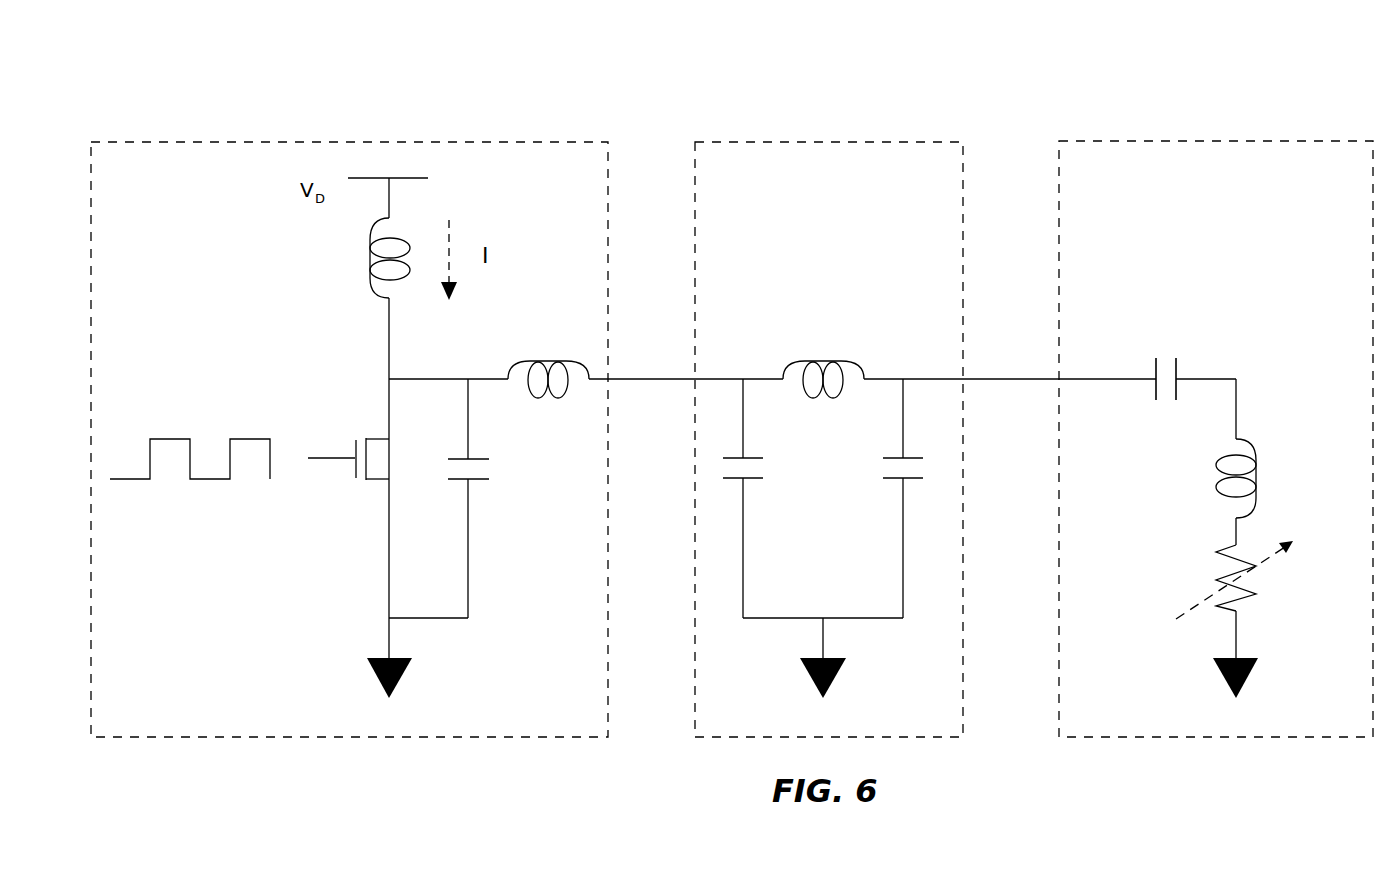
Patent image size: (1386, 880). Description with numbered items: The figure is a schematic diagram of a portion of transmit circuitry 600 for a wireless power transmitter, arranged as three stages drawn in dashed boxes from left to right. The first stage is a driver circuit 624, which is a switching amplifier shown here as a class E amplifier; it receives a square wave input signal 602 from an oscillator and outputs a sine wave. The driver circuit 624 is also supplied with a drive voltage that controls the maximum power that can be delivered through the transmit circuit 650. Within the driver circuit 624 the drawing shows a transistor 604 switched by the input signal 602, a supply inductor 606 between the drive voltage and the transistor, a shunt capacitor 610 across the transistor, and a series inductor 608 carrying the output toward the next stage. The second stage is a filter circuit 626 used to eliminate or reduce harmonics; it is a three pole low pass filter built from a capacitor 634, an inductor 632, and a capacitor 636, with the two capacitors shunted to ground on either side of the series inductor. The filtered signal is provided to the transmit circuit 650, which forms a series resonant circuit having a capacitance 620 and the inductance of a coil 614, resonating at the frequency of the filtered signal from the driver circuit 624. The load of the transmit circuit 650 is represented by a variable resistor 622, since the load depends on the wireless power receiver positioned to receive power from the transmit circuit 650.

The transmit circuitry 600 is at (268, 93).
The input signal 602 is at (165, 439).
The transistor 604 is at (375, 437).
The inductor 606 is at (370, 240).
The inductor 608 is at (548, 358).
The capacitor 610 is at (478, 457).
The coil 614 is at (1247, 438).
The capacitance 620 is at (1178, 368).
The variable resistor 622 is at (1228, 545).
The driver circuit 624 is at (465, 142).
The filter circuit 626 is at (888, 142).
The inductor 632 is at (843, 358).
The capacitor 634 is at (753, 457).
The capacitor 636 is at (913, 457).
The transmit circuit 650 is at (1287, 141).